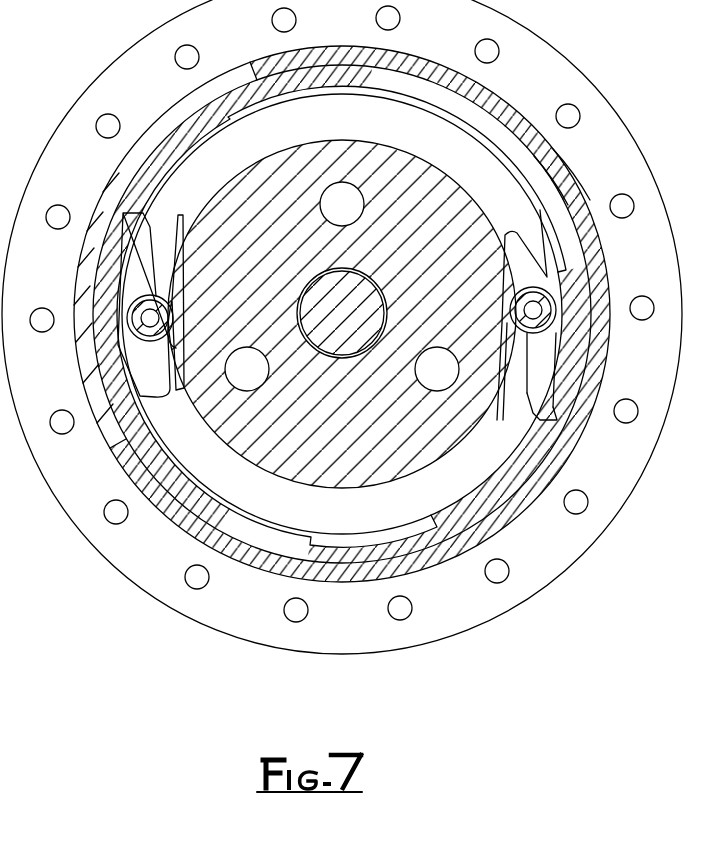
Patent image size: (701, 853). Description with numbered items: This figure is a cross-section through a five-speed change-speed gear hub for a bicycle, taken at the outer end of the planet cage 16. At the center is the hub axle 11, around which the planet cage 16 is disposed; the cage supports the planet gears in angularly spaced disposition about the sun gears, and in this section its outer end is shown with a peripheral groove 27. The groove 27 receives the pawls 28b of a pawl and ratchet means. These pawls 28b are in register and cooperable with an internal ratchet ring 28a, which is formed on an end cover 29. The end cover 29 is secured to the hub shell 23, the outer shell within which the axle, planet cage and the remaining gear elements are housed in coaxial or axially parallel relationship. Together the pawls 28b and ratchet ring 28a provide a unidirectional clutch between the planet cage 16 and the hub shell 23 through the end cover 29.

The hub axle 11 is at (355, 314).
The planet cage 16 is at (425, 256).
The hub shell 23 is at (594, 266).
The peripheral groove 27 is at (415, 128).
The internal ratchet ring 28a is at (543, 433).
The pawls 28b is at (153, 358).
The end cover 29 is at (573, 183).